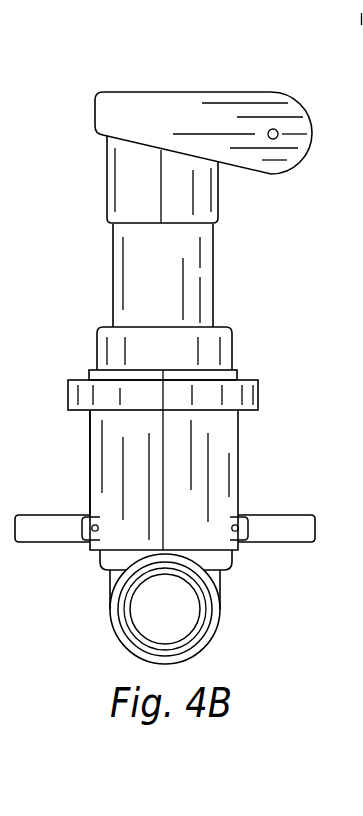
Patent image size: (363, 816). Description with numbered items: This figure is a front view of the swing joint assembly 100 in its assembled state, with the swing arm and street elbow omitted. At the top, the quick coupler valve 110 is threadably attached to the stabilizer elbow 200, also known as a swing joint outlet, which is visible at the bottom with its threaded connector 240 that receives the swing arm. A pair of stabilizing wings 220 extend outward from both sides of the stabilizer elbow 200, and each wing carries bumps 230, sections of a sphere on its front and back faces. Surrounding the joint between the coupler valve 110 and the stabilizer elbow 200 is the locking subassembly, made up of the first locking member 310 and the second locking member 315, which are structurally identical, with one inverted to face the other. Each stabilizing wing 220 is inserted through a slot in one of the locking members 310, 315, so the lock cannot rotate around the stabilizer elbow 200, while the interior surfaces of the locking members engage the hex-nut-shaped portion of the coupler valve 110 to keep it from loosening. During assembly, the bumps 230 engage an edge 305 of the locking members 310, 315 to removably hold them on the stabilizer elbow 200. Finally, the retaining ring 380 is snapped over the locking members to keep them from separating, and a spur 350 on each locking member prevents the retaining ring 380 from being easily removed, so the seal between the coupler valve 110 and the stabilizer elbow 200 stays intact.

The swing joint assembly 100 is at (55, 50).
The quick coupler valve 110 is at (107, 182).
The spur 350 is at (89, 373).
The retaining ring 380 is at (258, 397).
The first locking member 310 is at (238, 455).
The second locking member 315 is at (90, 457).
The stabilizing wing 220 is at (53, 543).
The edge 305 is at (92, 517).
The bump 230 is at (93, 529).
The stabilizer elbow 200 is at (93, 559).
The threaded connector 240 is at (200, 638).